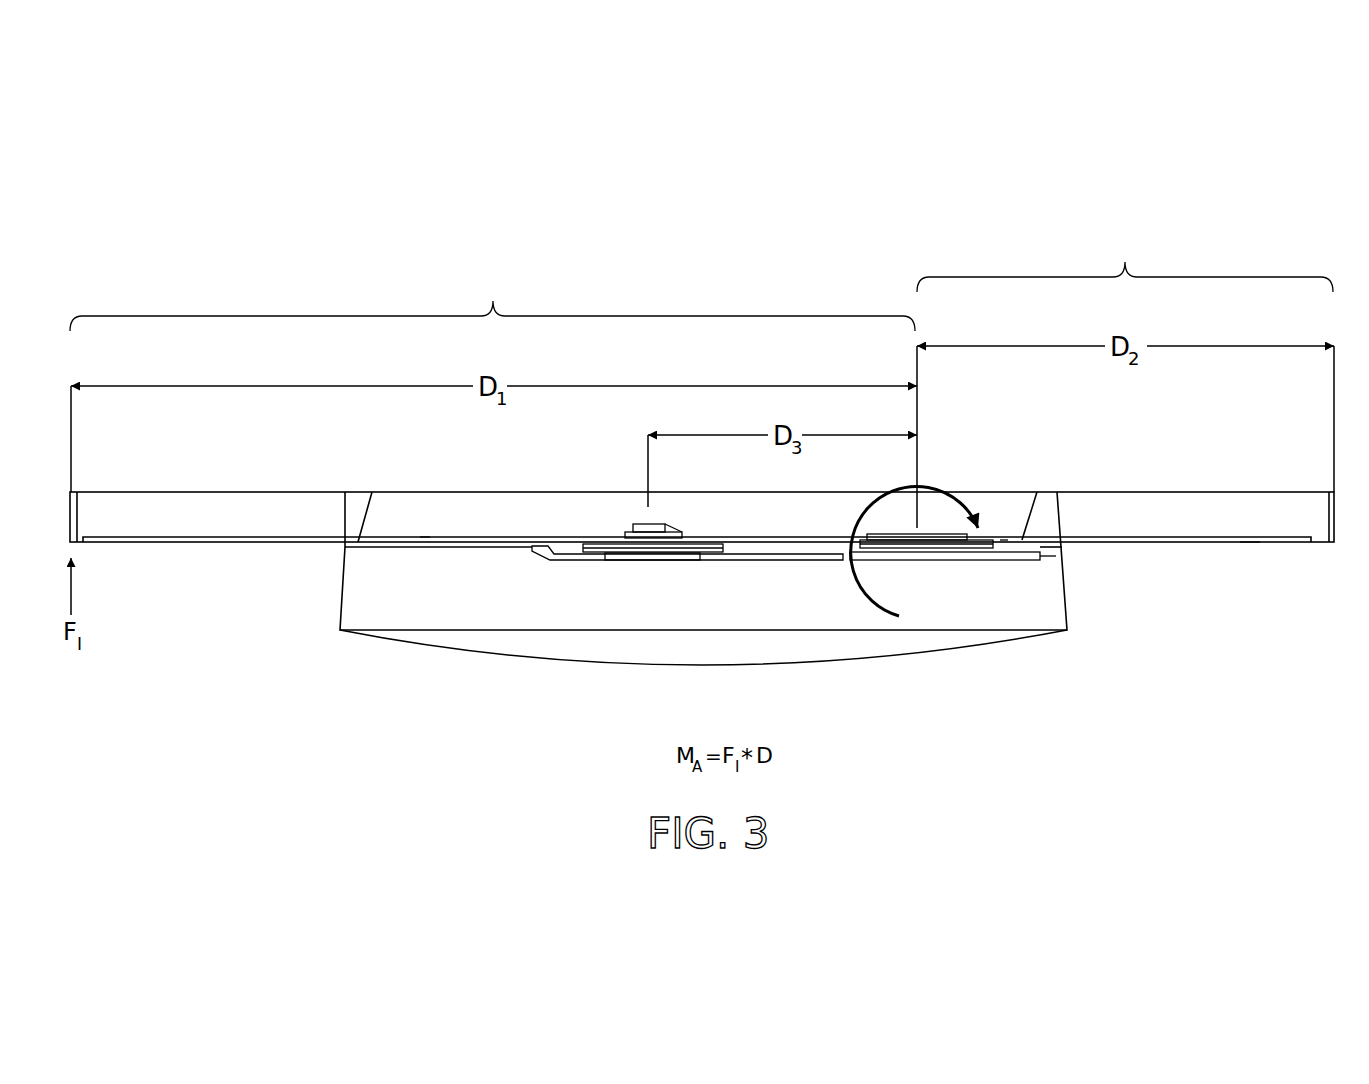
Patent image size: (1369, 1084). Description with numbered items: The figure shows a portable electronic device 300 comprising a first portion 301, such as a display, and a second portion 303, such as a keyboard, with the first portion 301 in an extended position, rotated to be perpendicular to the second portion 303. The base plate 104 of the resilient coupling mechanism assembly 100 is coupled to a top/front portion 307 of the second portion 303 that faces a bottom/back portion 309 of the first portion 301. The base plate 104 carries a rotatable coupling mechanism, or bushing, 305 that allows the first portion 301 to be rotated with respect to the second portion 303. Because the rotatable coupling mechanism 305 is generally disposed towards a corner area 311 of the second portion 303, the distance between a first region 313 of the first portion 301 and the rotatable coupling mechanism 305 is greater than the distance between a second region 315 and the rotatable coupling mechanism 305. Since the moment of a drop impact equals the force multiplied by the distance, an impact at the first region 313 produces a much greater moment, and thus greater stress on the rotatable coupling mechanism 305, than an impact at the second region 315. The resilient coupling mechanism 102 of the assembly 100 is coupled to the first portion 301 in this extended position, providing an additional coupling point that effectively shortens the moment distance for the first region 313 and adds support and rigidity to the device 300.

The portable electronic device 300 is at (691, 168).
The first region 313 is at (492, 300).
The second region 315 is at (1125, 260).
The first portion 301 is at (1331, 525).
The second portion 303 is at (1067, 592).
The resilient coupling mechanism assembly 100 is at (653, 625).
The base plate 104 is at (548, 560).
The resilient coupling mechanism 102 is at (627, 483).
The rotatable coupling mechanism 305 is at (935, 534).
The top/front portion 307 is at (715, 496).
The corner area 311 is at (1095, 496).
The bottom/back portion 309 is at (1275, 594).